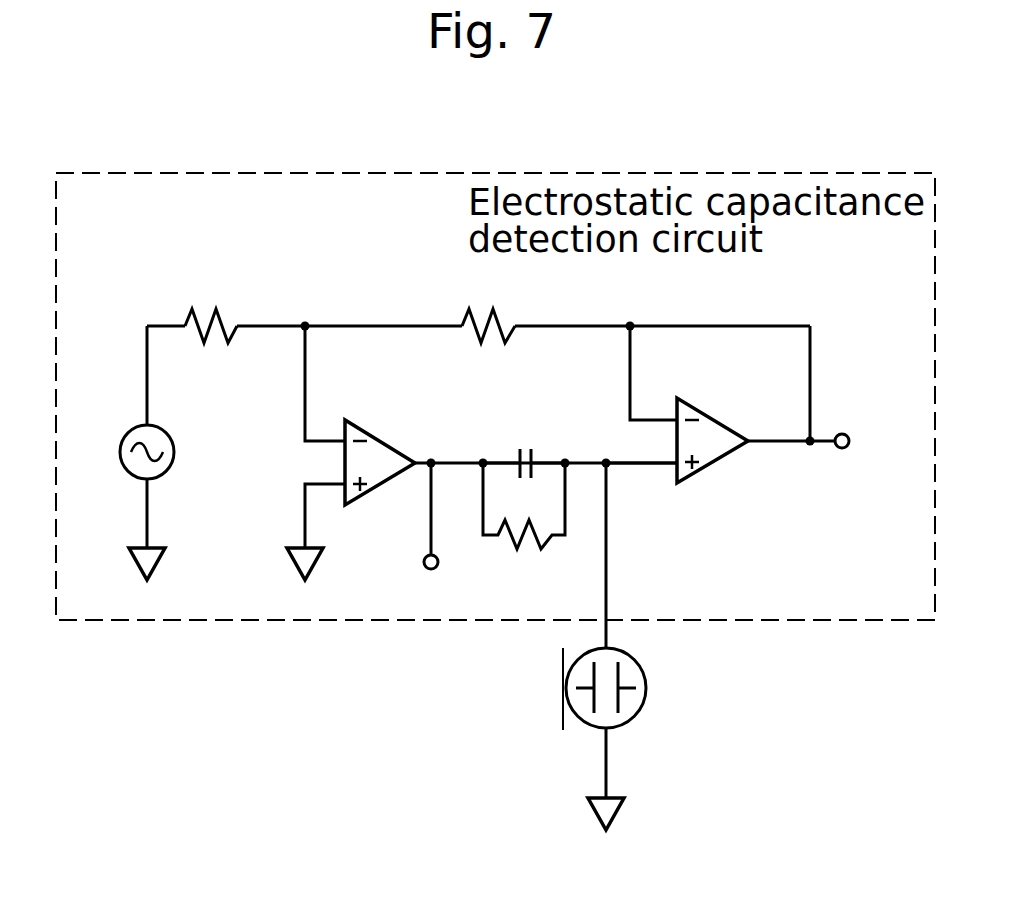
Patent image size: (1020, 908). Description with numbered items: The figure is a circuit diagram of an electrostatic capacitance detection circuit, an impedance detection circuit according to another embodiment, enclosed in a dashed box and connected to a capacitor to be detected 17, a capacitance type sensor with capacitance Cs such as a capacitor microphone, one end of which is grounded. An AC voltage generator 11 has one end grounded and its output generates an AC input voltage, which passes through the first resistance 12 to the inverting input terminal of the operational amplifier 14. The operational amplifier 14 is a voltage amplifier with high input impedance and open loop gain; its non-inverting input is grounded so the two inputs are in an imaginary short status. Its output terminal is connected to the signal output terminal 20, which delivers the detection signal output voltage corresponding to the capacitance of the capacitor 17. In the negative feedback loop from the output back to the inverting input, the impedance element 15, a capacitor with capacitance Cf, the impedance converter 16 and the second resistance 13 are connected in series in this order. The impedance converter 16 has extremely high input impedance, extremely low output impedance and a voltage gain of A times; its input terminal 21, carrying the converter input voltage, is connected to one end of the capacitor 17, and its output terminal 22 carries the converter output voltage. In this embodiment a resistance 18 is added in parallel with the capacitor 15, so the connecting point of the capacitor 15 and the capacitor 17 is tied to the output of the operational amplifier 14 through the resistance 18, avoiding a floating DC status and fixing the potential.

The AC voltage generator 11 is at (128, 432).
The resistance (R1) 12 is at (227, 338).
The resistance (R2) 13 is at (477, 343).
The operational amplifier 14 is at (357, 418).
The impedance element 15 is at (537, 447).
The impedance converter 16 is at (703, 410).
The capacitor to be detected 17 is at (647, 670).
The resistance 18 is at (521, 548).
The signal output terminal 20 is at (423, 560).
The input terminal 21 is at (653, 466).
The output terminal 22 is at (847, 436).